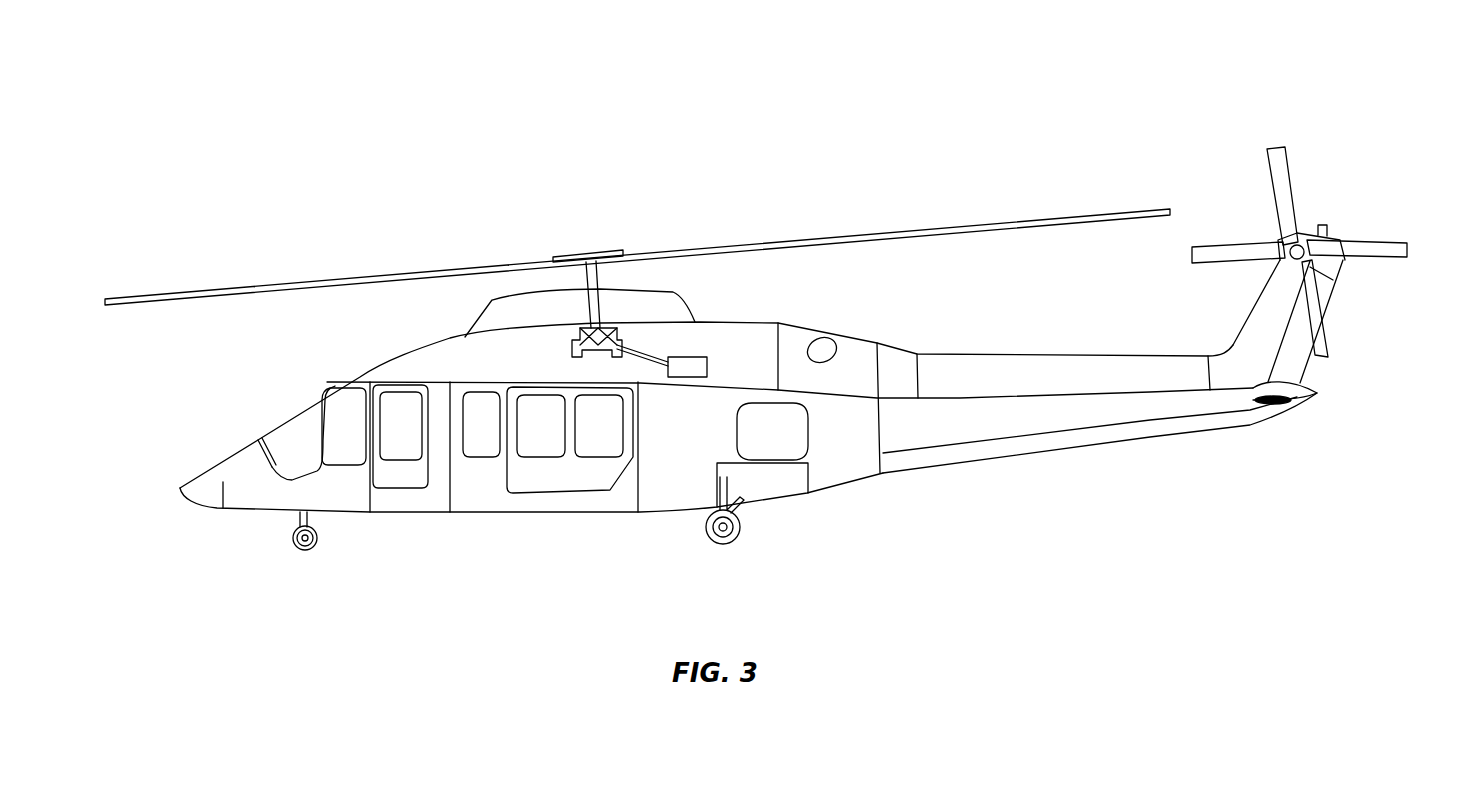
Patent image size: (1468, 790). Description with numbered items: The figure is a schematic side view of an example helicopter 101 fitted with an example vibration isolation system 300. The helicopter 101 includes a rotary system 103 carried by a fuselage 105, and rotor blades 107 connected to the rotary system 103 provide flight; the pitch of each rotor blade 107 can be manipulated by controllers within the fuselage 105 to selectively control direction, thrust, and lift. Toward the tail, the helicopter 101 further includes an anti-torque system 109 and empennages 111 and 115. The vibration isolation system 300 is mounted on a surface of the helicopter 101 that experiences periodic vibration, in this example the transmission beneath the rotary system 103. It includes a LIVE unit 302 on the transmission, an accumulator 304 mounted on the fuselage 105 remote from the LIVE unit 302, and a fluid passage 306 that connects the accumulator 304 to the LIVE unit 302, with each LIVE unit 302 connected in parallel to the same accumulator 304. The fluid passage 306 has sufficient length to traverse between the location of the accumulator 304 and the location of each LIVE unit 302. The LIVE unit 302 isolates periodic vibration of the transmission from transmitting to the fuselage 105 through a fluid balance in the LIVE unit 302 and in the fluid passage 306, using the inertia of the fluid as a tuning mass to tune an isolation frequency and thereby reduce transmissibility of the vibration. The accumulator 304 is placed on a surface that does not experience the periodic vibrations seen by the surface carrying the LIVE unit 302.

The helicopter 101 is at (275, 176).
The rotary system 103 is at (615, 227).
The fuselage 105 is at (433, 347).
The rotor blades 107 is at (917, 227).
The anti-torque system 109 is at (1333, 213).
The empennage 111 is at (1013, 455).
The empennage 115 is at (1278, 402).
The vibration isolation system 300 is at (538, 243).
The LIVE unit 302 is at (572, 343).
The accumulator 304 is at (707, 364).
The fluid passage 306 is at (650, 352).